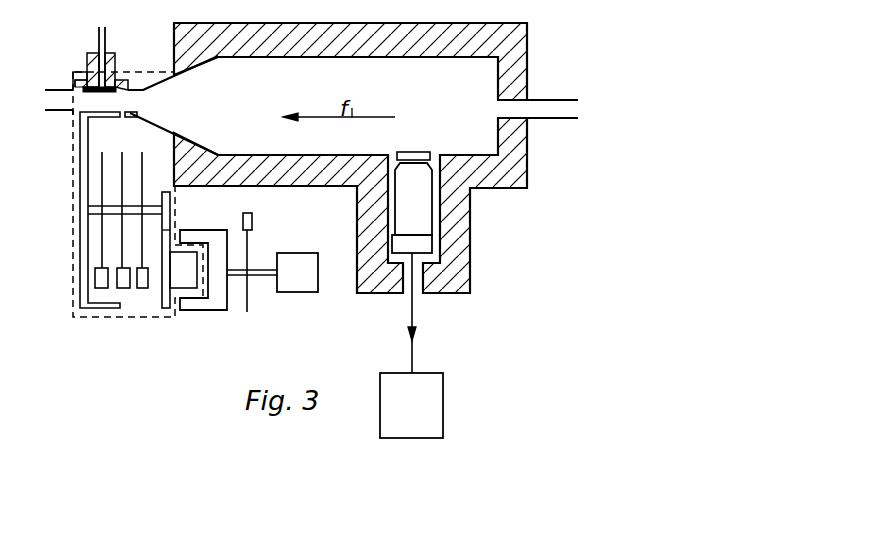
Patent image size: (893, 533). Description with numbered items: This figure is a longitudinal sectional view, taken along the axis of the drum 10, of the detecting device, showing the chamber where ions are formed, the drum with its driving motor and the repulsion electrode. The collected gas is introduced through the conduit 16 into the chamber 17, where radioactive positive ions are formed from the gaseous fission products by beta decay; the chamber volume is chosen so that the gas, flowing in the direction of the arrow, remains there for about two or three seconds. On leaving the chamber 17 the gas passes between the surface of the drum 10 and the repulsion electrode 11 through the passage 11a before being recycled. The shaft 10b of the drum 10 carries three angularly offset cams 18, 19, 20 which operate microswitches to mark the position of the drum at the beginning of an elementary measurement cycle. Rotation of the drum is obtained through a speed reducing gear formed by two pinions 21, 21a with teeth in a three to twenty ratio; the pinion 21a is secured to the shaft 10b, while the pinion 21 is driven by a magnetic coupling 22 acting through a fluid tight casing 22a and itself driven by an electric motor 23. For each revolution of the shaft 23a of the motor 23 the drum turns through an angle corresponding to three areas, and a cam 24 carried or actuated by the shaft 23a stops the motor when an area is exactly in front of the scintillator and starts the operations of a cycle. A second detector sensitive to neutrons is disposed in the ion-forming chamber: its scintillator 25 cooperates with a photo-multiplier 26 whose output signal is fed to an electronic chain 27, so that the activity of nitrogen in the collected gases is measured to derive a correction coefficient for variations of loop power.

The drum 10 is at (95, 114).
The shaft 10b is at (124, 210).
The repulsion electrode 11 is at (80, 72).
The passage 11a is at (108, 97).
The conduit 16 is at (549, 108).
The chamber 17 is at (401, 87).
The cam 18 is at (100, 289).
The cam 19 is at (120, 289).
The cam 20 is at (142, 289).
The pinion 21 is at (166, 287).
The pinion 21a is at (168, 217).
The magnetic coupling 22 is at (190, 283).
The fluid tight casing 22a is at (128, 319).
The electric motor 23 is at (302, 278).
The shaft 23a is at (268, 278).
The cam 24 is at (253, 222).
The scintillator 25 is at (414, 152).
The photo-multiplier 26 is at (422, 217).
The electronic chain 27 is at (434, 413).